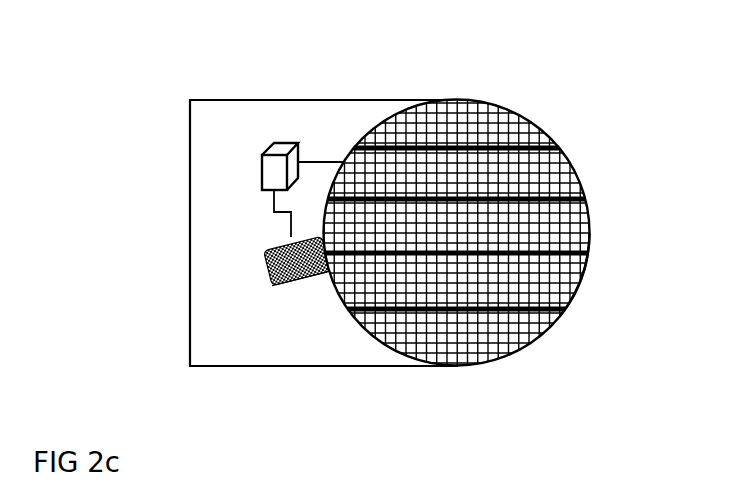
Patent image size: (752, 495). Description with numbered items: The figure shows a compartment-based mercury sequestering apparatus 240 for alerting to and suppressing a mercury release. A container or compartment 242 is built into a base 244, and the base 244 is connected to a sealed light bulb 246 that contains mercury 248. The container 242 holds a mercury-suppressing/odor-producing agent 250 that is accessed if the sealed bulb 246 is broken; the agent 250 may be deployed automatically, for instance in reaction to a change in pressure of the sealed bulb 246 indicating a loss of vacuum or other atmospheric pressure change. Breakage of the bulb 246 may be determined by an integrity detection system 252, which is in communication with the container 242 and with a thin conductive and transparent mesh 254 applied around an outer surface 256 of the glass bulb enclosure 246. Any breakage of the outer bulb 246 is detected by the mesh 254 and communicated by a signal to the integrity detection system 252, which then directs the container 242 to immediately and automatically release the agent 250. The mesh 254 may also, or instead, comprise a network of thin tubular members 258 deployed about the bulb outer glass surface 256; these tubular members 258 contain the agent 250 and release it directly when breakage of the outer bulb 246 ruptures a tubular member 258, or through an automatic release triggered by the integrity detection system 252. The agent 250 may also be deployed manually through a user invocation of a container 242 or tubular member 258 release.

The compartment-based mercury sequestering apparatus 240 is at (229, 46).
The container 242 is at (267, 267).
The base 244 is at (220, 366).
The sealed light bulb 246 is at (575, 175).
The mercury 248 is at (502, 355).
The mercury-suppressing/odor-producing agent 250 is at (302, 291).
The integrity detection system 252 is at (262, 178).
The thin conductive and transparent mesh 254 is at (593, 282).
The outer surface 256 is at (561, 129).
The thin tubular members 258 is at (583, 198).